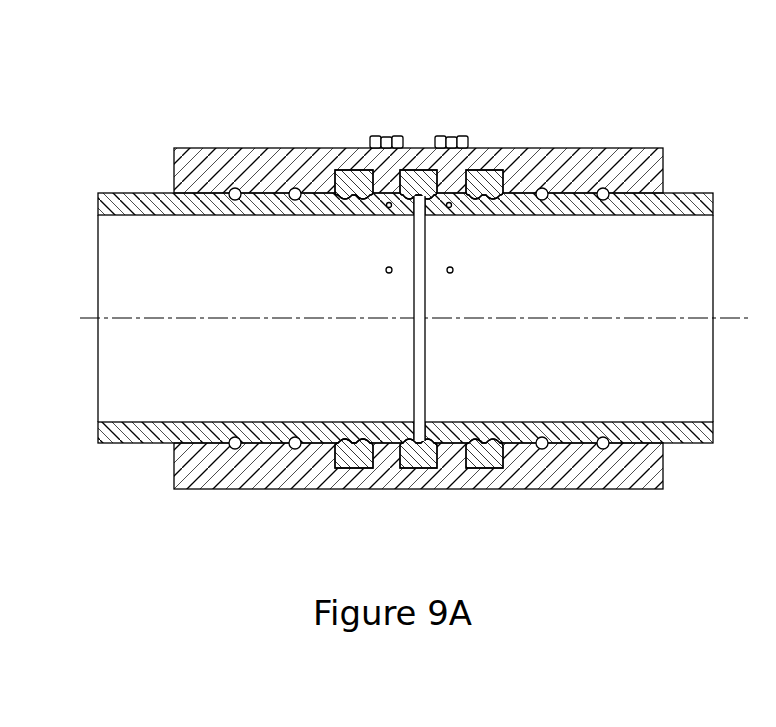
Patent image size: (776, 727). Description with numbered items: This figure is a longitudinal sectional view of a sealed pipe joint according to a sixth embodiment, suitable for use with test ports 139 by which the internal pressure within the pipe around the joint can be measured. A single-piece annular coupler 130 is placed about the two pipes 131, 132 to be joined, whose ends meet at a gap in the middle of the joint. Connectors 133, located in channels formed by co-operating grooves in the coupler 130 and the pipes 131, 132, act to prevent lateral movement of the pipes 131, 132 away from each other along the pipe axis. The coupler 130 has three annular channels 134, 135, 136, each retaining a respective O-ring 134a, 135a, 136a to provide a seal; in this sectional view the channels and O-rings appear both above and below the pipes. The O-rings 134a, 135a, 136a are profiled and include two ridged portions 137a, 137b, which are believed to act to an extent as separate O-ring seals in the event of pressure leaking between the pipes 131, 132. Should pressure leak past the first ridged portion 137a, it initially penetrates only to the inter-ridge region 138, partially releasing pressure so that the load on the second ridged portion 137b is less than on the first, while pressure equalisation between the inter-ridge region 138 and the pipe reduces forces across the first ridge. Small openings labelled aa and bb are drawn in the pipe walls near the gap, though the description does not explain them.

The coupler 130 is at (587, 150).
The pipe 131 is at (120, 193).
The pipe 132 is at (690, 193).
The connectors 133 is at (603, 450).
The annular channel 134 is at (343, 170).
The annular channel 135 is at (421, 168).
The annular channel 136 is at (500, 160).
The O-ring 134a is at (365, 469).
The O-ring 135a is at (428, 469).
The O-ring 136a is at (484, 469).
The ridged portion 137a is at (342, 439).
The ridged portion 137b is at (360, 439).
The inter-ridge region 138 is at (291, 188).
The test ports 139 is at (378, 135).
The pipe wall hole aa is at (416, 284).
The pipe wall hole bb is at (416, 226).